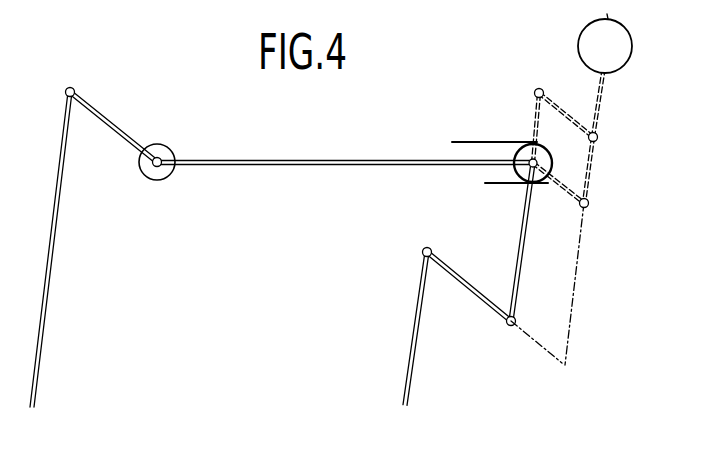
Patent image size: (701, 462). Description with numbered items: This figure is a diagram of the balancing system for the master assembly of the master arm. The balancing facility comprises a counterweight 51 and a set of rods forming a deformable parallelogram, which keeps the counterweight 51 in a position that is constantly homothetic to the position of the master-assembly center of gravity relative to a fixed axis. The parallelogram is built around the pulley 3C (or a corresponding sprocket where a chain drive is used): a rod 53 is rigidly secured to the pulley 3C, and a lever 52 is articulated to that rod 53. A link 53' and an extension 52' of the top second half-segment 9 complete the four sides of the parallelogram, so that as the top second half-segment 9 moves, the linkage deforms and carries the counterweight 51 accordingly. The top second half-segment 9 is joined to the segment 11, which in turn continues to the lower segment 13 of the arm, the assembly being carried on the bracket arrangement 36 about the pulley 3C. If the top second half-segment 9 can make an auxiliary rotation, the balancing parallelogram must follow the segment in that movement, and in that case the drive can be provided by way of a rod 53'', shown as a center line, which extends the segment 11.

The pulley 3C is at (539, 172).
The top second half-segment 9 is at (517, 288).
The segment 11 is at (470, 296).
The leg 13 is at (410, 366).
The bracket 36 is at (504, 183).
The counterweight 51 is at (613, 62).
The lever 52 is at (613, 170).
The extension of the top second half-segment 52' is at (509, 128).
The rod 53 is at (586, 186).
The link 53' is at (556, 85).
The rod 53'' is at (574, 284).